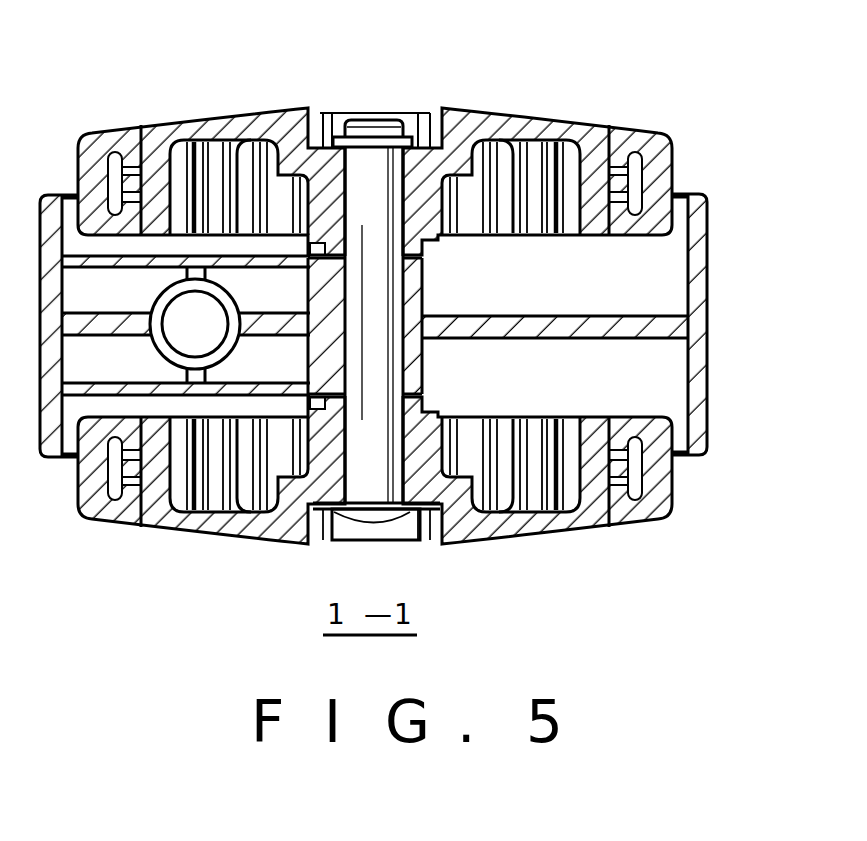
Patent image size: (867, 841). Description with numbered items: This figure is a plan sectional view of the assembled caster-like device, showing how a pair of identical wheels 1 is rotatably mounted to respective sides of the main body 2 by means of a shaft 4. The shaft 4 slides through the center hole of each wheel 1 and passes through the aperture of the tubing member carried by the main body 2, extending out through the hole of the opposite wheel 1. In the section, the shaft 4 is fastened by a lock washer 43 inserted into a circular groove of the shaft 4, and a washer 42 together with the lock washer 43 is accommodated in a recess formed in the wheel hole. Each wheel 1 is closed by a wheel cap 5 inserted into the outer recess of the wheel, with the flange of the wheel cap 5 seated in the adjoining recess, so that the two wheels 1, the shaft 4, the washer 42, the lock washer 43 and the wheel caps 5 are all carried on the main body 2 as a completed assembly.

The wheel 1 is at (530, 118).
The main body 2 is at (391, 325).
The shaft 4 is at (400, 472).
The wheel cap 5 is at (385, 112).
The washer 42 is at (418, 133).
The lock washer 43 is at (333, 114).